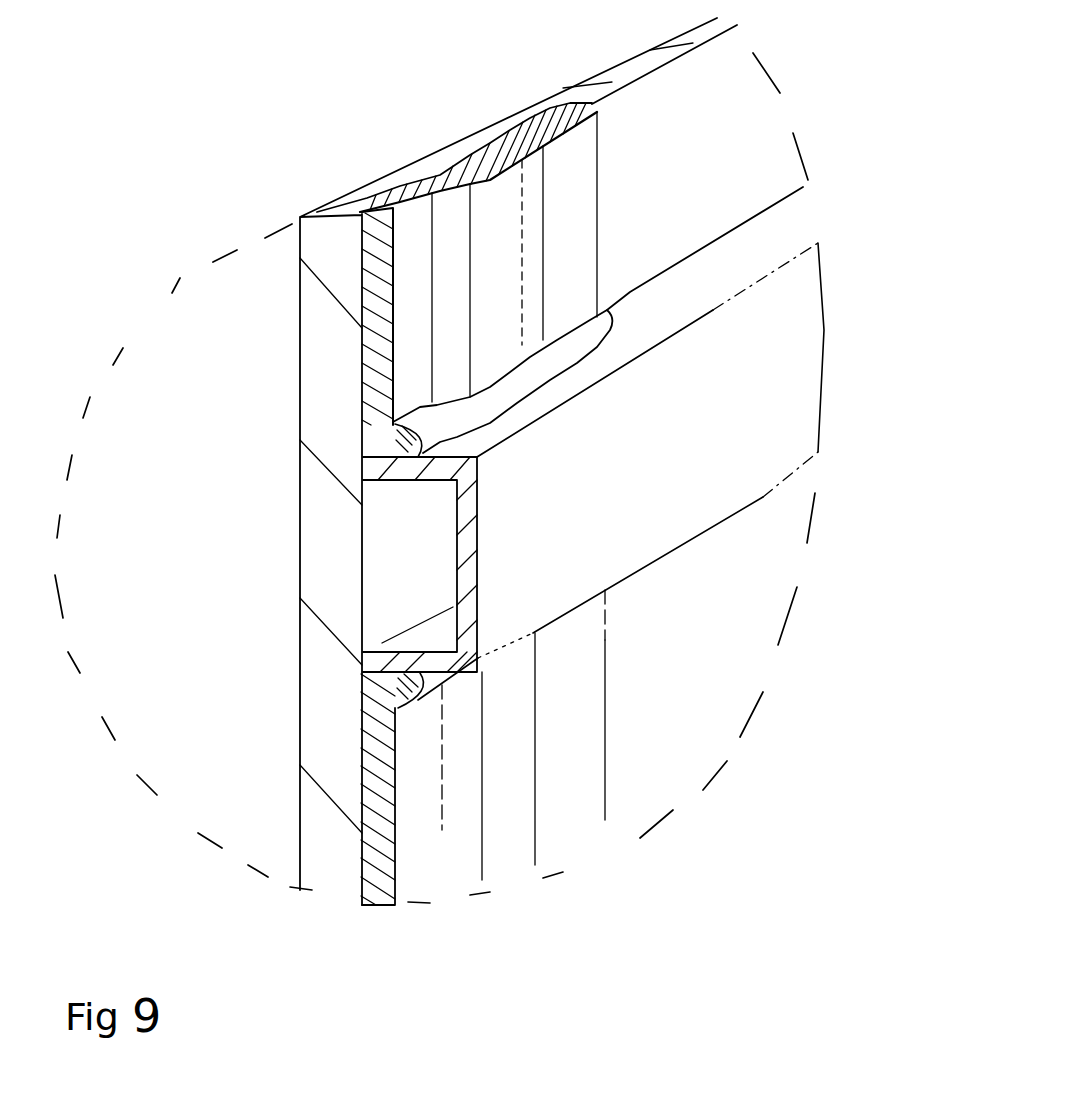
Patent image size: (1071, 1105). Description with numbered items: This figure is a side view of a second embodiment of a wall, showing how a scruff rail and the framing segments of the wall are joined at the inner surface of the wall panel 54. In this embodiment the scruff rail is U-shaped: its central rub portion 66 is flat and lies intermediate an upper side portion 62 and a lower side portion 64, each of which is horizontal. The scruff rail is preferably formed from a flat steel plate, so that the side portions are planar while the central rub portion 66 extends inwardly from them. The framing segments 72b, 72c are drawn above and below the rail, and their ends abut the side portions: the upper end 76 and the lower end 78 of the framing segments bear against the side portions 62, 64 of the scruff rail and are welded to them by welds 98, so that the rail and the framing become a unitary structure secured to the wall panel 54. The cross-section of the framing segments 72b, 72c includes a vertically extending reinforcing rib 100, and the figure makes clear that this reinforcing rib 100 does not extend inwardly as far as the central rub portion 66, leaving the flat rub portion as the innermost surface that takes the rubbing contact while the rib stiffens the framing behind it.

The wall panel 54 is at (312, 523).
The framing segment 72b is at (424, 169).
The framing segment 72c is at (384, 920).
The reinforcing rib 100 is at (515, 178).
The lower end of framing segment 78 is at (375, 452).
The upper end of framing segment 76 is at (362, 688).
The weld 98 is at (600, 328).
The upper side portion 62 is at (418, 479).
The lower side portion 64 is at (408, 664).
The central rub portion 66 is at (667, 475).